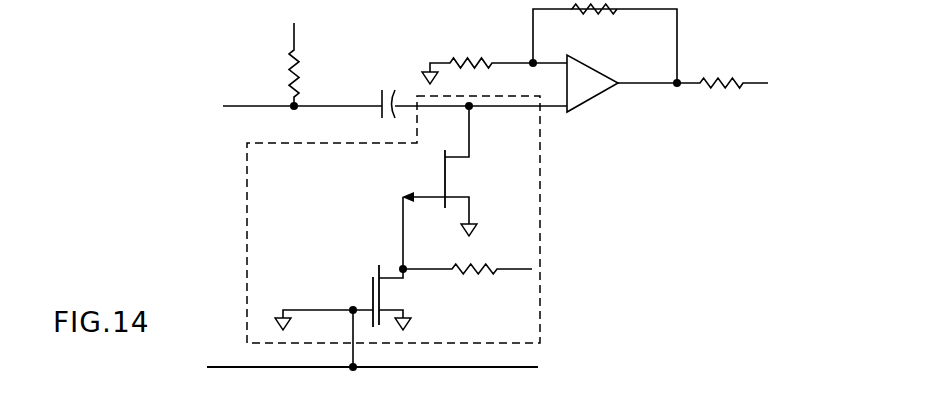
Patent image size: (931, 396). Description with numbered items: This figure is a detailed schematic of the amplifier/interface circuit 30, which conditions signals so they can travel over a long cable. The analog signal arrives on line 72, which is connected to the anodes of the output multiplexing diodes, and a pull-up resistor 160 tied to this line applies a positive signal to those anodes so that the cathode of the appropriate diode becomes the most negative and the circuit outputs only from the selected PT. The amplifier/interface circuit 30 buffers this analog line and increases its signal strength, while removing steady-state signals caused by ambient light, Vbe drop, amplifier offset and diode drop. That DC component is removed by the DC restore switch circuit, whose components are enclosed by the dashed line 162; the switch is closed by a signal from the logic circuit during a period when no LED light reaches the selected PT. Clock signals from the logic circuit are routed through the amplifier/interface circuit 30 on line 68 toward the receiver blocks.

The line 72 is at (277, 102).
The pull-up resistor 160 is at (300, 54).
The dashed line 162 is at (543, 189).
The amplifier/interface circuit 30 is at (565, 235).
The line 68 is at (221, 367).